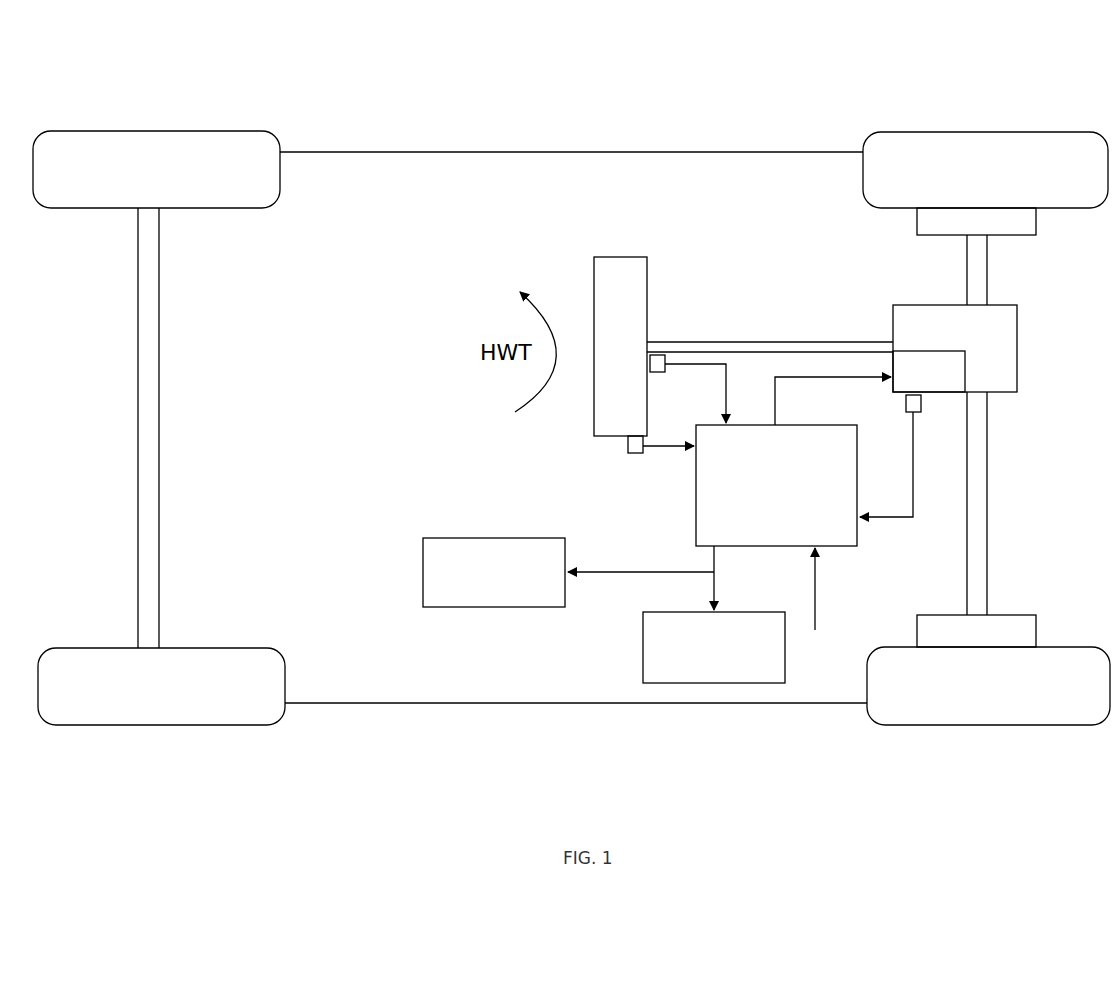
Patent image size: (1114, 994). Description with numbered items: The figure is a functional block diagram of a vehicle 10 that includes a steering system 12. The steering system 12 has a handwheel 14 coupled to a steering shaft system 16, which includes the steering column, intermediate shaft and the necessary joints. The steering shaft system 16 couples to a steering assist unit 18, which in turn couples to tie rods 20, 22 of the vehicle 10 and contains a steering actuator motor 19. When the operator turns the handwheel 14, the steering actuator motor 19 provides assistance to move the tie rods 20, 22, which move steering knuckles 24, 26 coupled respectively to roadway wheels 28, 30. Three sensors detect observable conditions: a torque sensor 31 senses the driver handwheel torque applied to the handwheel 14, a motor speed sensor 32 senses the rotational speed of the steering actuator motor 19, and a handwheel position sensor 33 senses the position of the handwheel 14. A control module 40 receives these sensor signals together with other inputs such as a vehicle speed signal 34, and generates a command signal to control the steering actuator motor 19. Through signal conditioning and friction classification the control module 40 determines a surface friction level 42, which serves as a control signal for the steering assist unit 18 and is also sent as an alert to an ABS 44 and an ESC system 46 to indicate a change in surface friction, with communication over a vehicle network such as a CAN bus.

The vehicle 10 is at (615, 50).
The steering system 12 is at (736, 235).
The handwheel 14 is at (617, 257).
The steering shaft system 16 is at (740, 342).
The steering assist unit 18 is at (1018, 345).
The steering actuator motor 19 is at (943, 383).
The tie rod 20 is at (988, 285).
The tie rod 22 is at (989, 476).
The steering knuckle 24 is at (917, 210).
The steering knuckle 26 is at (948, 614).
The roadway wheel 28 is at (1029, 131).
The roadway wheel 30 is at (1046, 647).
The torque sensor 31 is at (658, 374).
The motor speed sensor 32 is at (922, 403).
The handwheel position sensor 33 is at (633, 455).
The vehicle speed signal 34 is at (815, 606).
The control module 40 is at (795, 425).
The surface friction level 42 is at (716, 598).
The ABS 44 is at (433, 538).
The ESC system 46 is at (643, 648).